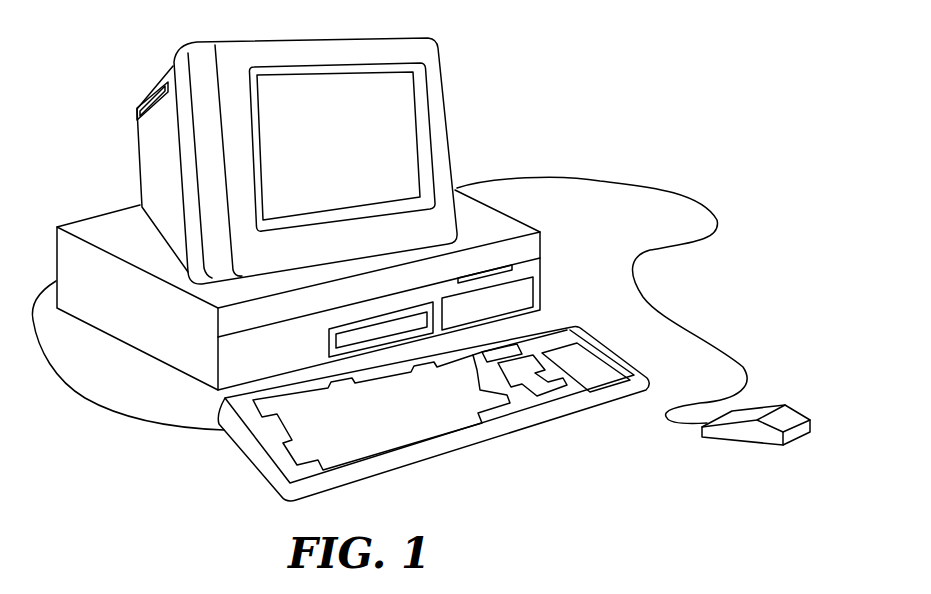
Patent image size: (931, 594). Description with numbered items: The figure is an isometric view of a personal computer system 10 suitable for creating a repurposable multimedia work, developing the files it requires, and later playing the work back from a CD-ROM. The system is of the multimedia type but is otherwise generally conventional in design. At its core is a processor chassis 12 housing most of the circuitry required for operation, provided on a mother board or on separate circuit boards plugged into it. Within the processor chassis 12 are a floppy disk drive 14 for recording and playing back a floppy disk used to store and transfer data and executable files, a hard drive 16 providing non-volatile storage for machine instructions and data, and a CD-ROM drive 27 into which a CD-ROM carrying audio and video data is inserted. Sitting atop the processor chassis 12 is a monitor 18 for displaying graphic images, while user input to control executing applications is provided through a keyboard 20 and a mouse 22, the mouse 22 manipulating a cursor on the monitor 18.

The personal computer system 10 is at (437, 295).
The processor chassis 12 is at (339, 287).
The floppy disk drive 14 is at (488, 270).
The hard drive 16 is at (510, 297).
The monitor 18 is at (443, 105).
The keyboard 20 is at (533, 425).
The mouse 22 is at (786, 445).
The CD-ROM drive 27 is at (331, 344).